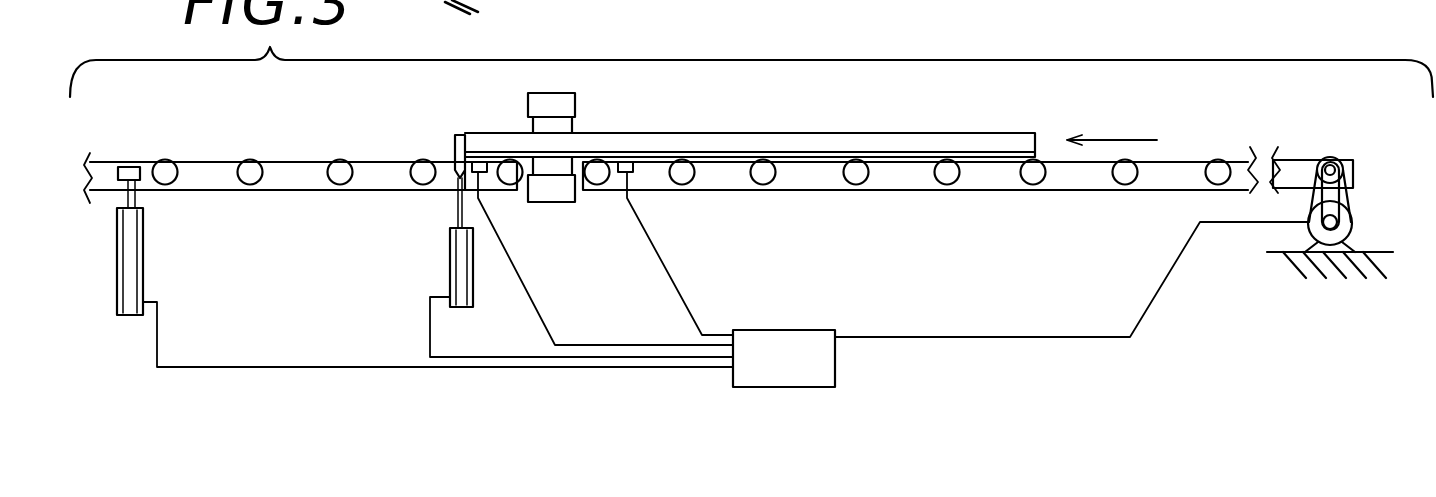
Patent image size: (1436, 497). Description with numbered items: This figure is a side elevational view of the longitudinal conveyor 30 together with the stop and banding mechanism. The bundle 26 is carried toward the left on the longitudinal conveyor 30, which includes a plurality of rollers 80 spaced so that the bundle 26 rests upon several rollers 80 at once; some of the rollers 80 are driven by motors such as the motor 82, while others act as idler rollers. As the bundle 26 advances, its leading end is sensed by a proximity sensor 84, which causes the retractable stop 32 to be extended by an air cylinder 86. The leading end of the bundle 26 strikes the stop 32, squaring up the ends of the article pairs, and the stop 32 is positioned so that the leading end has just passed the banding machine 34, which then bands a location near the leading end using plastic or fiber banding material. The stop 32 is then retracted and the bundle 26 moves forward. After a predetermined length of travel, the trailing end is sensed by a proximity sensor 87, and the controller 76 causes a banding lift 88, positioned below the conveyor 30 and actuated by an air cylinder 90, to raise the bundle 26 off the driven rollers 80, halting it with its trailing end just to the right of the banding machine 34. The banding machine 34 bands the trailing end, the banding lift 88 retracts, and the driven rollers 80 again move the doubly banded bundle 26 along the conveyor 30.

The bundle 26 is at (884, 133).
The longitudinal conveyor 30 is at (1174, 137).
The retractable stop 32 is at (455, 147).
The banding machine 34 is at (576, 104).
The controller 76 is at (815, 330).
The rollers 80 is at (845, 176).
The motor 82 is at (1354, 222).
The proximity sensor 84 is at (478, 160).
The air cylinder 86 is at (450, 263).
The proximity sensor 87 is at (625, 160).
The banding lift 88 is at (128, 167).
The air cylinder 90 is at (143, 262).